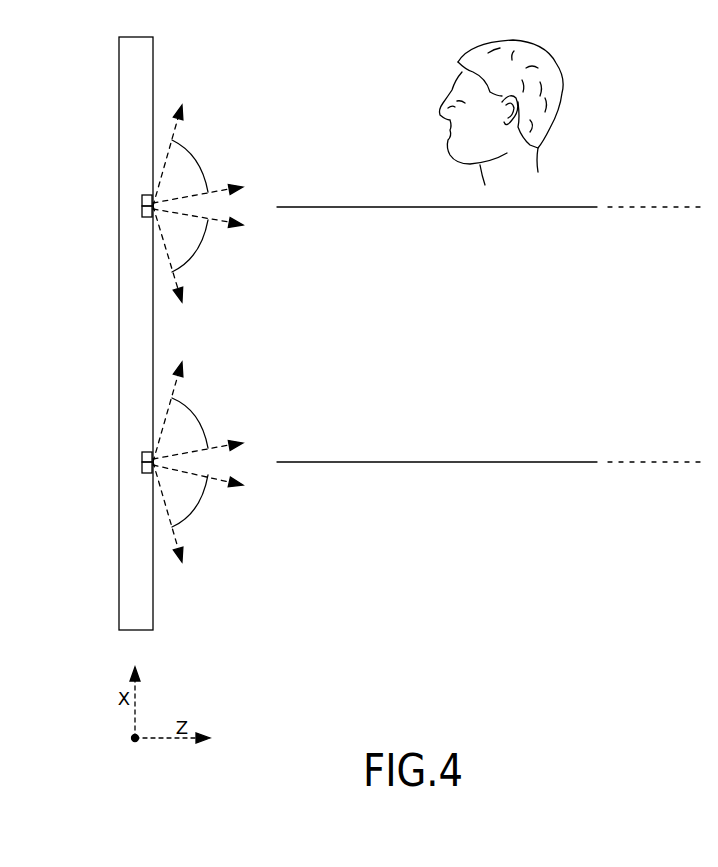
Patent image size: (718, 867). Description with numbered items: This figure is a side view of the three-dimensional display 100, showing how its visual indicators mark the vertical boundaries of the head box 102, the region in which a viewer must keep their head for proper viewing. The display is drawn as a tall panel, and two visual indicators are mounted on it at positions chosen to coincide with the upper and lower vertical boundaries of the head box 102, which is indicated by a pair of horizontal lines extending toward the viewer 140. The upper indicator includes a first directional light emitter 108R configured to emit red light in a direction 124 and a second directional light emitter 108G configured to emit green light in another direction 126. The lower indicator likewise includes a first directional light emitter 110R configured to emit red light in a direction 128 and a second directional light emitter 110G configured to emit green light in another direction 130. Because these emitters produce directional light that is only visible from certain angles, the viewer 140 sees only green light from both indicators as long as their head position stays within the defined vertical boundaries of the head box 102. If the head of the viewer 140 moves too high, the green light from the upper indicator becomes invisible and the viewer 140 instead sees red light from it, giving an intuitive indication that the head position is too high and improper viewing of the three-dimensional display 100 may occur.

The 3D display 100 is at (189, 37).
The head box 102 is at (491, 334).
The first directional light emitter 108R is at (142, 198).
The second directional light emitter 108G is at (142, 213).
The second directional light emitter 110G is at (142, 454).
The first directional light emitter 110R is at (142, 472).
The direction 124 is at (197, 160).
The direction 126 is at (197, 253).
The direction 128 is at (197, 512).
The direction 130 is at (197, 415).
The viewer 140 is at (562, 88).